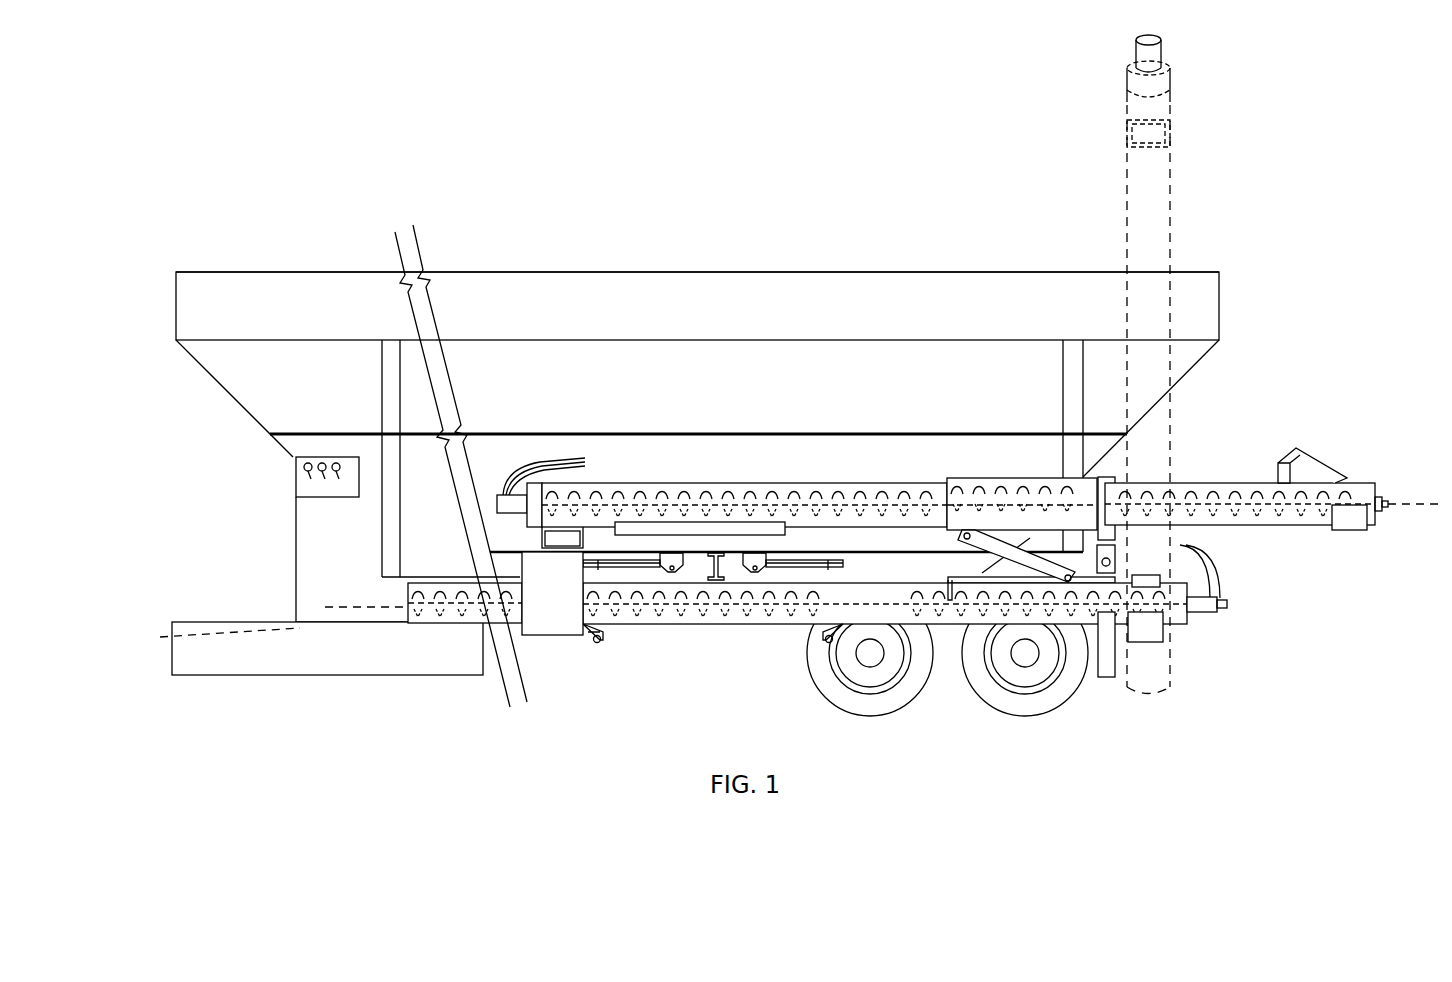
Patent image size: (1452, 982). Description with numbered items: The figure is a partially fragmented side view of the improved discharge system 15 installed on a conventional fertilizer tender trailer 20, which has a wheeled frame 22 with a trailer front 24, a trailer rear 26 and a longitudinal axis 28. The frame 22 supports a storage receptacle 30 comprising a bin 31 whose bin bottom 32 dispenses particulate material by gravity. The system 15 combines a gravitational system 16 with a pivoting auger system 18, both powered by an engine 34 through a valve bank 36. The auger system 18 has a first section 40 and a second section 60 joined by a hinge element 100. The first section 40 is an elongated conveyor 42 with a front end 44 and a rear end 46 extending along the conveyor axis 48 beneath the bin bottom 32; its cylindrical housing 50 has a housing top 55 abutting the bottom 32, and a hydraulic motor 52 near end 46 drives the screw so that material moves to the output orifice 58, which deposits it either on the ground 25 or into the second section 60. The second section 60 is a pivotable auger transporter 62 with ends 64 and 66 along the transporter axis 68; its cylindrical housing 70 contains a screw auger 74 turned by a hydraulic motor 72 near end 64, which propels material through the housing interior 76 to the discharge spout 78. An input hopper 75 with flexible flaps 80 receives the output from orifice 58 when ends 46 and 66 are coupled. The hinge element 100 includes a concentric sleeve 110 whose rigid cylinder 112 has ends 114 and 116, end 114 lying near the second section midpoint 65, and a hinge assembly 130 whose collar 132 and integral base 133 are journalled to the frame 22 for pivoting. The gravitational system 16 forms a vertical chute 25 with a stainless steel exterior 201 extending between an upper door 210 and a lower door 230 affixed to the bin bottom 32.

The discharge system 15 is at (698, 200).
The gravitational system 16 is at (590, 650).
The pivoting auger system 18 is at (1112, 680).
The mobile trailer 20 is at (235, 448).
The wheeled frame 22 is at (215, 655).
The trailer front 24 is at (288, 600).
The chute 25 is at (618, 650).
The trailer rear 26 is at (1125, 655).
The longitudinal axis 28 is at (160, 636).
The storage receptacle 30 is at (320, 310).
The bin 31 is at (483, 297).
The bin bottom 32 is at (455, 542).
The engine 34 is at (296, 540).
The valve bank 36 is at (296, 487).
The first section 40 is at (1198, 632).
The elongated conveyor 42 is at (775, 628).
The conveyor end 44 is at (400, 625).
The conveyor end 46 is at (1190, 620).
The conveyor axis 48 is at (328, 612).
The cylindrical housing 50 is at (437, 630).
The hydraulic motor 52 is at (1225, 594).
The housing top 55 is at (408, 582).
The output orifice 58 is at (1160, 637).
The second section 60 is at (1232, 470).
The auger transporter 62 is at (1365, 485).
The transporter end 64 is at (585, 462).
The second section midpoint 65 is at (895, 478).
The transporter end 66 is at (1388, 500).
The auger transporter longitudinal axis 68 is at (1403, 510).
The cylindrical housing 70 is at (690, 482).
The hydraulic motor 72 is at (498, 495).
The screw auger 74 is at (795, 480).
The input hopper 75 is at (1326, 453).
The housing interior 76 is at (1345, 528).
The discharge spout 78 is at (552, 593).
The flexible flaps 80 is at (1292, 452).
The hinge element 100 is at (1090, 470).
The concentric sleeve 110 is at (975, 475).
The rigid cylinder 112 is at (1015, 485).
The sleeve end 114 is at (948, 478).
The sleeve end 116 is at (1100, 465).
The hinge assembly 130 is at (1120, 542).
The collar 132 is at (1118, 482).
The integral base 133 is at (1115, 543).
The chute exterior 201 is at (520, 650).
The upper door 210 is at (512, 542).
The lower door 230 is at (549, 650).